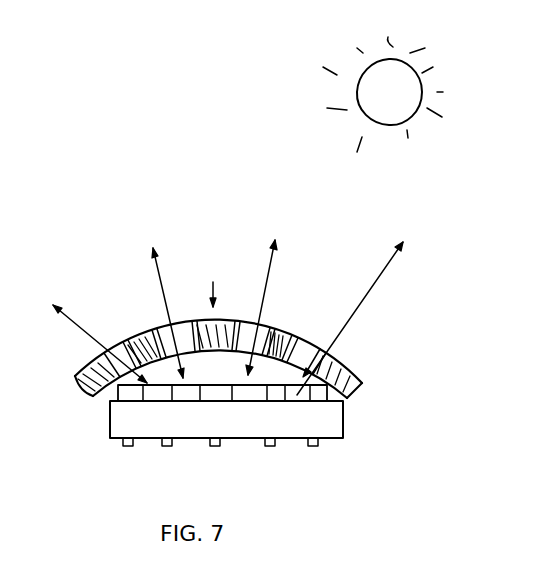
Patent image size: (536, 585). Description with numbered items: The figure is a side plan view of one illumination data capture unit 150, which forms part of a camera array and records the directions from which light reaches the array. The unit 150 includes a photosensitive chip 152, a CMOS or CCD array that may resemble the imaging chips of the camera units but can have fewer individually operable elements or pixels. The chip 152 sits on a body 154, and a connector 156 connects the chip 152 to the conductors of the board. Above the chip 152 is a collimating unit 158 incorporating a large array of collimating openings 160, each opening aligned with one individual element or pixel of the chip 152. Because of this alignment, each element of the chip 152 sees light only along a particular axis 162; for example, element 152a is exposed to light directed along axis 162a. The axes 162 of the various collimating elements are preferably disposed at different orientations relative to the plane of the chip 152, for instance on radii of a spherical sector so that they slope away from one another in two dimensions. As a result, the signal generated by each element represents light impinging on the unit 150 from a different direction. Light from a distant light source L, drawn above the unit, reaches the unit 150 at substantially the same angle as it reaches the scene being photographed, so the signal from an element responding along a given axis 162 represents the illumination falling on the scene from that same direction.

The illumination data capture unit 150 is at (252, 397).
The photosensitive chip 152 is at (122, 389).
The element of photosensitive chip 152a is at (323, 352).
The body 154 is at (337, 422).
The connector 156 is at (313, 448).
The collimating unit 158 is at (215, 285).
The collimating openings 160 is at (268, 327).
The axis 162 is at (267, 280).
The axis of element 152a 162a is at (392, 262).
The light source L is at (410, 63).